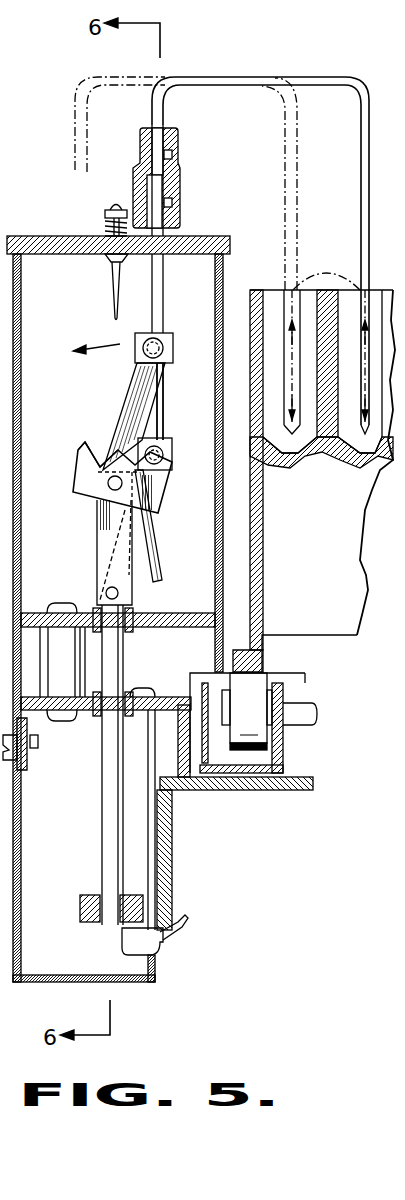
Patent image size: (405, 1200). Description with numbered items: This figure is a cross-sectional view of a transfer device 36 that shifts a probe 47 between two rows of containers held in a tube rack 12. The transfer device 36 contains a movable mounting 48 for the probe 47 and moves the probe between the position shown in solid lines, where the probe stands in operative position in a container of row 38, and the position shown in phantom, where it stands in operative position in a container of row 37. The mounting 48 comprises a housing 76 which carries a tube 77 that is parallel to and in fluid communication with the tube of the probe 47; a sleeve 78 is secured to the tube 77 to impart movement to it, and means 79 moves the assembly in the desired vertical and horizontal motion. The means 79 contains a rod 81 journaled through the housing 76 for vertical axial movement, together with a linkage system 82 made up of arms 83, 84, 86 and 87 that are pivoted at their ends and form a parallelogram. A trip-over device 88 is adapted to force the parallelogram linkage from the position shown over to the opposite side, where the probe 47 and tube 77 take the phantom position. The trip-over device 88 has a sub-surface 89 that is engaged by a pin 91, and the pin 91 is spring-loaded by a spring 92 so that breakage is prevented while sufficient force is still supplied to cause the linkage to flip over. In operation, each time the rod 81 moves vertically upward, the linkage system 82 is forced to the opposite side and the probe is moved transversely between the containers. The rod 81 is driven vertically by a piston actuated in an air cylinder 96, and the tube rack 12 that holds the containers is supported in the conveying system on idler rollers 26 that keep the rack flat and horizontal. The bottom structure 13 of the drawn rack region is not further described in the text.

The tube rack 12 is at (293, 477).
The wavy chamber bottom 13 is at (368, 448).
The roller 26 is at (258, 685).
The transfer device 36 is at (339, 66).
The container row 37 is at (270, 298).
The container row 38 is at (380, 298).
The probe 47 is at (362, 250).
The mounting 48 is at (196, 822).
The housing 76 is at (22, 383).
The tube 77 is at (164, 307).
The sleeve 78 is at (166, 362).
The means for moving 79 is at (100, 438).
The rod 81 is at (108, 822).
The linkage system 82 is at (82, 502).
The arm 83 is at (100, 532).
The arm 84 is at (132, 404).
The arm 86 is at (162, 421).
The arm 87 is at (142, 527).
The trip-over device 88 is at (85, 460).
The sub-surface 89 is at (97, 445).
The pin 91 is at (113, 277).
The spring 92 is at (105, 222).
The air cylinder 96 is at (381, 462).